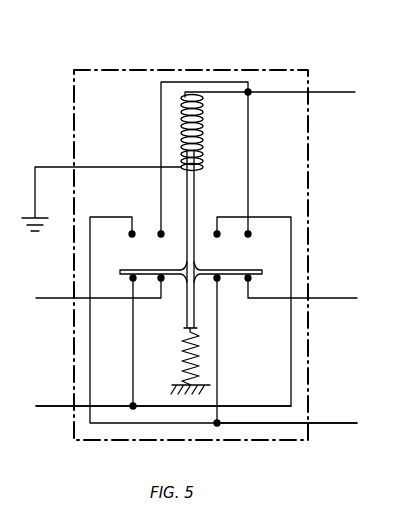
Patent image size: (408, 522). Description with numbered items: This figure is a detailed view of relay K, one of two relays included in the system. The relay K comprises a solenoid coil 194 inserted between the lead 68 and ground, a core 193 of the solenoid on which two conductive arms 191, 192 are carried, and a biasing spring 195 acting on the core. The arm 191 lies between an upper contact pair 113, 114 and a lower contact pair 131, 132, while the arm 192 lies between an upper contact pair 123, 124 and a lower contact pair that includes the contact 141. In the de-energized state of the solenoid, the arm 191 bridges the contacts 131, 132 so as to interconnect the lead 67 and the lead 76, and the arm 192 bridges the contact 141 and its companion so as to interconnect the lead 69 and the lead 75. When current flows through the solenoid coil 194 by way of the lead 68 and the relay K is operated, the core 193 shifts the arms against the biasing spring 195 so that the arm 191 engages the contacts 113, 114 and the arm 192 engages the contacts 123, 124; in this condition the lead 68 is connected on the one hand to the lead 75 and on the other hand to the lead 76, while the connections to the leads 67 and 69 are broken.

The relay K is at (113, 68).
The lead 68 is at (343, 92).
The solenoid coil 194 is at (204, 121).
The core 193 is at (195, 182).
The contact 124 is at (132, 234).
The conductive arm 192 is at (120, 271).
The contact 123 is at (161, 234).
The contact 114 is at (217, 234).
The contact 113 is at (248, 234).
The conductive arm 191 is at (262, 271).
The lead 69 is at (46, 298).
The contact 131 is at (248, 278).
The lead 67 is at (345, 300).
The contact 141 is at (161, 278).
The contact 132 is at (217, 278).
The biasing spring 195 is at (183, 371).
The lead 75 is at (49, 406).
The lead 76 is at (340, 423).